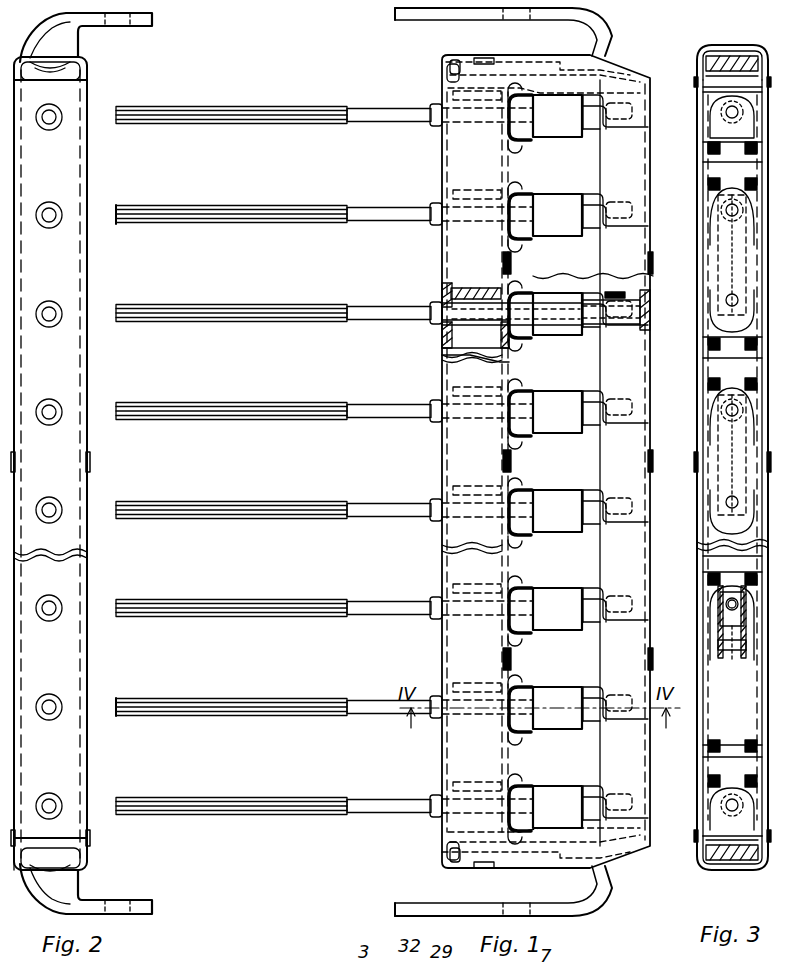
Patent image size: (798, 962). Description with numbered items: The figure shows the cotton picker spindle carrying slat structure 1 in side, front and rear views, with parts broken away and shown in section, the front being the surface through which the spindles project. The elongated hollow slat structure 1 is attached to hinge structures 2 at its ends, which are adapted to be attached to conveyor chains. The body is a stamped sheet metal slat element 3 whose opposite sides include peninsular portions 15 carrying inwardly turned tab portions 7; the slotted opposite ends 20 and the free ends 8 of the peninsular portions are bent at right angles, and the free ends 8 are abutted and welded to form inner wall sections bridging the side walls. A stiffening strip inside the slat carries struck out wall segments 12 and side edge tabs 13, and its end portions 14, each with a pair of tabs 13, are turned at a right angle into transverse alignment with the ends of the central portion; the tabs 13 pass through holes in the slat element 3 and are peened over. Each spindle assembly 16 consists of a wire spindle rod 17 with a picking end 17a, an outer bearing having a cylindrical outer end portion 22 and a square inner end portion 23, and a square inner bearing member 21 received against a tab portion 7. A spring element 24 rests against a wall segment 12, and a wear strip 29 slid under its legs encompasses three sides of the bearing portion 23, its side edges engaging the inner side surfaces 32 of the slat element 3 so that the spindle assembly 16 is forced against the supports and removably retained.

In FIG. 2, the slat structure 1 is at (58, 470).
In FIG. 1, the slat structure 1 is at (482, 663).
In FIG. 3, the slat structure 1 is at (742, 381).
In FIG. 2, the hinge structures 2 is at (138, 22).
In FIG. 1, the hinge structures 2 is at (402, 22).
In FIG. 3, the hinge structures 2 is at (754, 56).
In FIG. 2, the slat element 3 is at (88, 570).
In FIG. 1, the slat element 3 is at (456, 378).
In FIG. 3, the slat element 3 is at (713, 43).
In FIG. 1, the tab portions 7 is at (614, 292).
In FIG. 3, the tab portions 7 is at (732, 680).
In FIG. 1, the free ends 8 is at (650, 288).
In FIG. 3, the free ends 8 is at (669, 291).
In FIG. 1, the wall segments 12 is at (474, 298).
In FIG. 2, the tabs 13 is at (92, 468).
In FIG. 1, the tabs 13 is at (502, 462).
In FIG. 3, the tabs 13 is at (696, 464).
In FIG. 1, the end portions 14 is at (445, 84).
In FIG. 1, the peninsular portions 15 is at (586, 462).
In FIG. 1, the spindle assembly 16 is at (564, 340).
In FIG. 2, the spindle rod 17 is at (48, 208).
In FIG. 1, the spindle rod 17 is at (184, 124).
In FIG. 3, the spindle rod 17 is at (726, 606).
In FIG. 1, the picking end 17a is at (116, 212).
In FIG. 2, the slotted opposite ends 20 is at (72, 64).
In FIG. 1, the inner bearing member 21 is at (614, 322).
In FIG. 3, the inner bearing member 21 is at (730, 592).
In FIG. 2, the outer end portion 22 is at (46, 228).
In FIG. 1, the outer end portion 22 is at (432, 320).
In FIG. 1, the inner end portion 23 is at (466, 332).
In FIG. 1, the spring element 24 is at (522, 282).
In FIG. 3, the spring element 24 is at (704, 788).
In FIG. 1, the wear strip 29 is at (518, 748).
In FIG. 3, the wear strip 29 is at (700, 752).
In FIG. 1, the inner side surfaces 32 is at (518, 166).